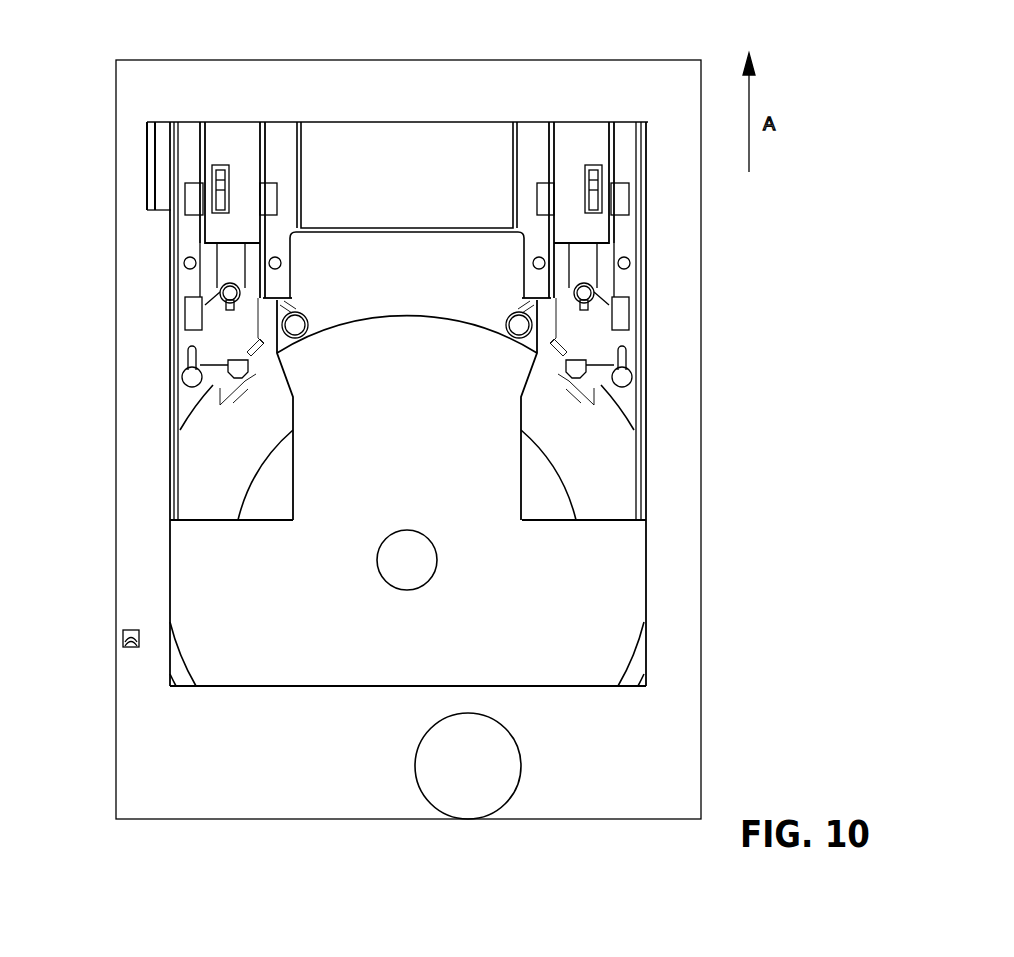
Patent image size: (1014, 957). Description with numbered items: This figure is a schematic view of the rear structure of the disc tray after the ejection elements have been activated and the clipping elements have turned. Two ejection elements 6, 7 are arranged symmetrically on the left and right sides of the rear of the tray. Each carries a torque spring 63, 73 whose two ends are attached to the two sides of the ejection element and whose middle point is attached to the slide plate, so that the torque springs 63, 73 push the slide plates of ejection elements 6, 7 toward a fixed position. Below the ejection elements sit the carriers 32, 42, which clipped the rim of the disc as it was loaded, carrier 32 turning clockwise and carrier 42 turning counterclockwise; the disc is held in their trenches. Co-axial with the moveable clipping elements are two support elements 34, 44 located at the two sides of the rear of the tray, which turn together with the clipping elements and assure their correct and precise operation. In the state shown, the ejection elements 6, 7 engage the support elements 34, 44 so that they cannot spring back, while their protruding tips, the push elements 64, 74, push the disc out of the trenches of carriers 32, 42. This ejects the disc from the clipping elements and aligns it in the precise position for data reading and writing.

The ejection element 7 is at (215, 231).
The ejection element 6 is at (598, 232).
The torque spring 73 is at (232, 283).
The torque spring 63 is at (572, 283).
The carrier 42 is at (293, 325).
The carrier 32 is at (521, 327).
The push element 74 is at (230, 364).
The push element 64 is at (584, 368).
The support element 44 is at (190, 378).
The support element 34 is at (622, 380).